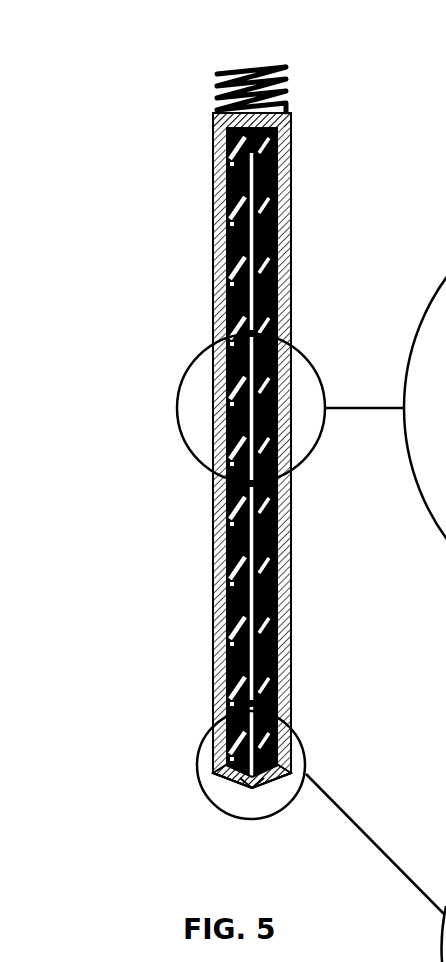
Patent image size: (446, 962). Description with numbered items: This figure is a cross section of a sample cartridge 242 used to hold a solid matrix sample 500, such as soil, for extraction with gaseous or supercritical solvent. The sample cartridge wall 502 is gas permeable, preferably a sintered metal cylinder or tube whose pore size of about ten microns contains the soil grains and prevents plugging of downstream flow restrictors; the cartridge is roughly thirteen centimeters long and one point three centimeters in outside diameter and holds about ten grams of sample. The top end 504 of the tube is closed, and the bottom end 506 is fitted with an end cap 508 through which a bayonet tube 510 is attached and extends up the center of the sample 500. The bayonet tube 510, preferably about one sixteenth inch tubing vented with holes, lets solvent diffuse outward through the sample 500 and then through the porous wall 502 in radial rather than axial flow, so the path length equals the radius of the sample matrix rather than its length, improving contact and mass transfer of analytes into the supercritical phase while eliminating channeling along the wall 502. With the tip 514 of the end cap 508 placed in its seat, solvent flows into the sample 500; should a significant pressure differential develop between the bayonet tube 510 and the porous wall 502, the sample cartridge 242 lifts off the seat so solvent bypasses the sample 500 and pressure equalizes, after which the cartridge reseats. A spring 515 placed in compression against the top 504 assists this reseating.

The sample cartridge 242 is at (192, 258).
The solid matrix sample 500 is at (213, 558).
The sample cartridge wall 502 is at (213, 168).
The top end 504 is at (305, 100).
The bottom end 506 is at (312, 737).
The end cap 508 is at (268, 777).
The bayonet tube 510 is at (213, 648).
The tip 514 is at (252, 792).
The spring 515 is at (217, 82).